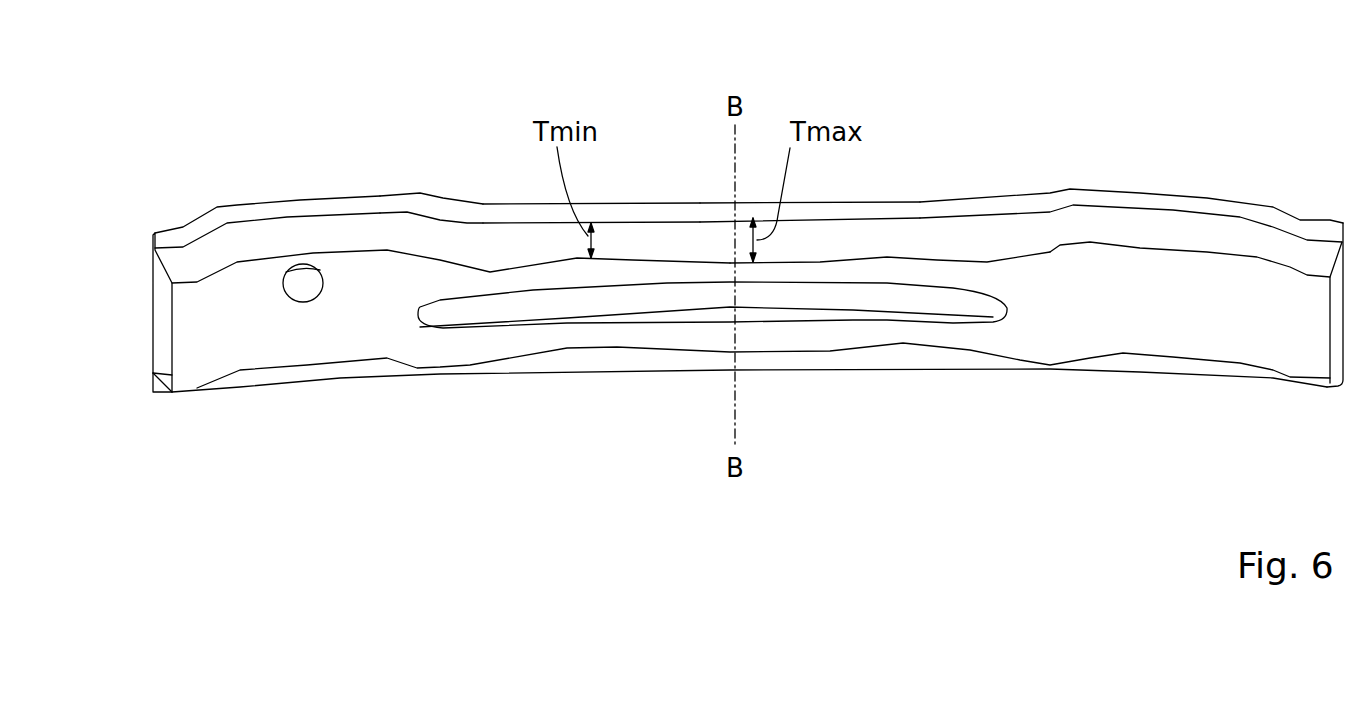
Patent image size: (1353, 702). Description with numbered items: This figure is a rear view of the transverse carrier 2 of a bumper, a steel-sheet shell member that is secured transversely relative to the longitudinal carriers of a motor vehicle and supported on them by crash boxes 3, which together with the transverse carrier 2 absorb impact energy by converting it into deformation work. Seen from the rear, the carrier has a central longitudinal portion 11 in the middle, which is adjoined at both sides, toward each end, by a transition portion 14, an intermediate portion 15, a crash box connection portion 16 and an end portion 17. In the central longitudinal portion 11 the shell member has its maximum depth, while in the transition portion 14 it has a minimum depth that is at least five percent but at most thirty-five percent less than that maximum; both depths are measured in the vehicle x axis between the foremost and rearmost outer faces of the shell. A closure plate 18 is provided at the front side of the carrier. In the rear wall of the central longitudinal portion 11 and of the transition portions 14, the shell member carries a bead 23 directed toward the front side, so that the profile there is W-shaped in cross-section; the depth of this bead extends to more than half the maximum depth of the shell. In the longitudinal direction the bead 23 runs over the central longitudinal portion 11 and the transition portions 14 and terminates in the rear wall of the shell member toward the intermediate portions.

The transverse carrier 2 is at (967, 195).
The crash box 3 is at (1072, 333).
The central longitudinal portion 11 is at (755, 173).
The transition portion 14 is at (657, 182).
The intermediate portion 15 is at (442, 197).
The crash box connection portion 16 is at (378, 180).
The end portion 17 is at (193, 200).
The closure plate 18 is at (153, 288).
The bead 23 is at (833, 302).